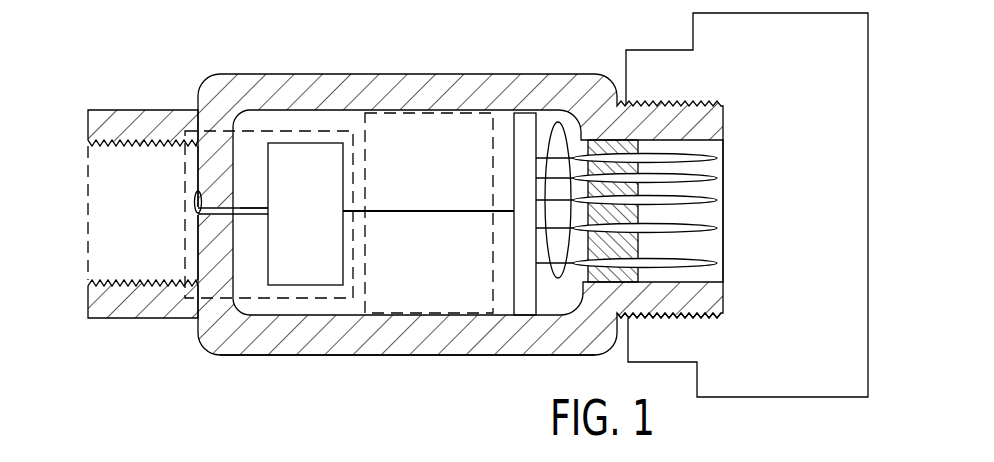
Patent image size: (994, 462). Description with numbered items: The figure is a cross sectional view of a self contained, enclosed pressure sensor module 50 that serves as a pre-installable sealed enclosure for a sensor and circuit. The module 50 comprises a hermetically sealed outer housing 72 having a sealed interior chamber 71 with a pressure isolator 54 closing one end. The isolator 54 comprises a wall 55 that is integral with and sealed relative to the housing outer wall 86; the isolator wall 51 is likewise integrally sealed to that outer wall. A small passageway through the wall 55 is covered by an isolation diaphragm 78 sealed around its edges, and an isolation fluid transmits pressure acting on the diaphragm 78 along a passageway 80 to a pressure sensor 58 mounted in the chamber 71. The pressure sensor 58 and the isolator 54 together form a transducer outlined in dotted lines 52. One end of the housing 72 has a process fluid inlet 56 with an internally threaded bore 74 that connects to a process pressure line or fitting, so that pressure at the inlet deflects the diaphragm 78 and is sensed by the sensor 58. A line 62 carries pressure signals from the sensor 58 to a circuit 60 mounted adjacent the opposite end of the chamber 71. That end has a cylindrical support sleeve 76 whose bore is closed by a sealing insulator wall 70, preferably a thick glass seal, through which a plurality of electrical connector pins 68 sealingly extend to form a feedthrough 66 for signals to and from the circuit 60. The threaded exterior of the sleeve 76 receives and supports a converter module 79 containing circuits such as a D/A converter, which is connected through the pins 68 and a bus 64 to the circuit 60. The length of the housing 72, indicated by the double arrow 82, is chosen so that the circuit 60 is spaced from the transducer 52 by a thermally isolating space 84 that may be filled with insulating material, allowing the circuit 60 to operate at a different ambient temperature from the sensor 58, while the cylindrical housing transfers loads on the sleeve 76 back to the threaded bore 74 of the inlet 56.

The pressure sensor module 50 is at (720, 67).
The isolator wall 51 is at (223, 203).
The transducer 52 is at (270, 130).
The pressure isolator 54 is at (182, 169).
The wall 55 is at (213, 265).
The process fluid inlet 56 is at (122, 191).
The pressure sensor 58 is at (322, 218).
The circuit 60 is at (525, 127).
The line 62 is at (467, 210).
The bus 64 is at (558, 122).
The feedthrough 66 is at (620, 145).
The electrical connector pins 68 is at (716, 162).
The sealing insulator wall 70 is at (627, 245).
The interior chamber 71 is at (427, 134).
The outer housing 72 is at (330, 73).
The internally threaded bore 74 is at (98, 147).
The cylindrical support sleeve 76 is at (683, 316).
The isolation diaphragm 78 is at (197, 223).
The converter module 79 is at (745, 398).
The passageway 80 is at (250, 212).
The double arrow 82 is at (385, 369).
The thermally isolating space 84 is at (365, 133).
The housing outer wall 86 is at (342, 356).